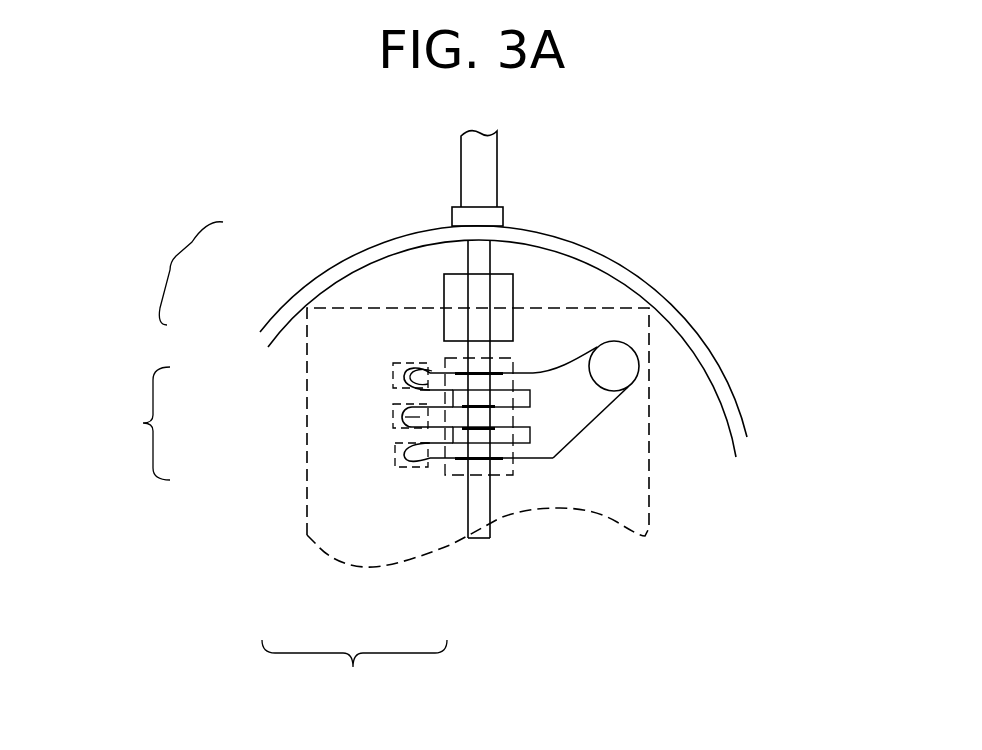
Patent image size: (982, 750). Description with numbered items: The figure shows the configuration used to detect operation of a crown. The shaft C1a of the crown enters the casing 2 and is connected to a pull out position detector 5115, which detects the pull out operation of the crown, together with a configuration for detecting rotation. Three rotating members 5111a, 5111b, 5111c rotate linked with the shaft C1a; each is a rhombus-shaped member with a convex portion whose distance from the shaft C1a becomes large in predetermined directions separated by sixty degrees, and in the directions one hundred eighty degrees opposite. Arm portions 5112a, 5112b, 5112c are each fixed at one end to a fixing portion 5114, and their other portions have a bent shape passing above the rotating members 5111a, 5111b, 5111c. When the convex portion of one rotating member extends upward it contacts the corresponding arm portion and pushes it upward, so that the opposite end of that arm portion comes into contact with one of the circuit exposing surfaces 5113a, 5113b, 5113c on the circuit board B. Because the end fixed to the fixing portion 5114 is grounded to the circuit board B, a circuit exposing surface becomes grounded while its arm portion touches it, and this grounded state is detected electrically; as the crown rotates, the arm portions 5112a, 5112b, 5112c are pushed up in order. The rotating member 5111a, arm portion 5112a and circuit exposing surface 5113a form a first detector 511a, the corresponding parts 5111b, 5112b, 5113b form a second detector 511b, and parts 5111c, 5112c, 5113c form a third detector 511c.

The shaft C1a is at (487, 157).
The casing 2 is at (552, 245).
The pull out position detector 5115 is at (513, 293).
The fixing portion 5114 is at (622, 363).
The circuit board B is at (650, 463).
The first detector 511a is at (163, 273).
The rotating member 5111a is at (455, 373).
The arm portion 5112a is at (415, 378).
The circuit exposing surface 5113a is at (400, 390).
The second detector 511b is at (125, 423).
The rotating member 5111b is at (430, 403).
The arm portion 5112b is at (432, 408).
The circuit exposing surface 5113b is at (428, 412).
The third detector 511c is at (354, 671).
The rotating member 5111c is at (457, 463).
The arm portion 5112c is at (438, 451).
The circuit exposing surface 5113c is at (392, 460).